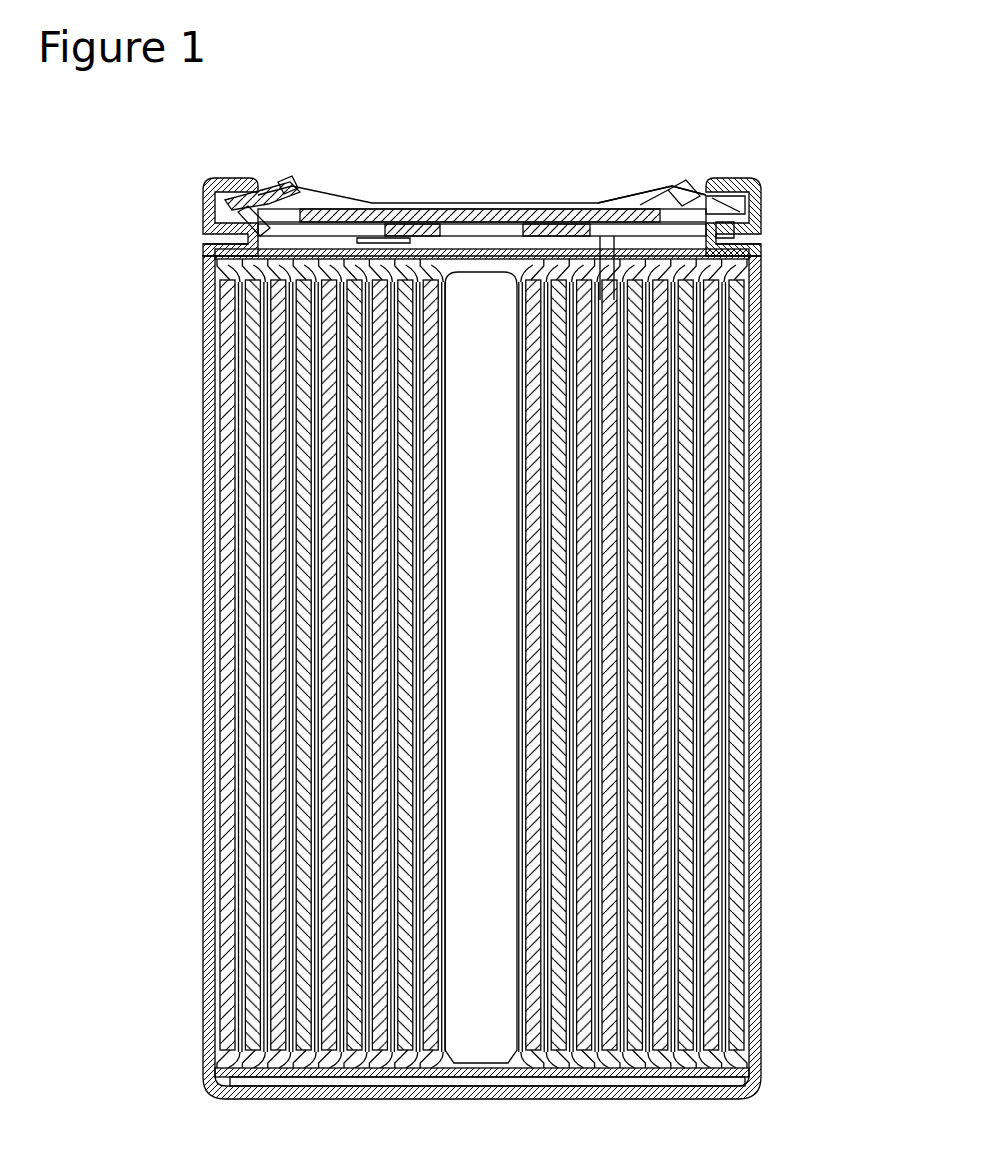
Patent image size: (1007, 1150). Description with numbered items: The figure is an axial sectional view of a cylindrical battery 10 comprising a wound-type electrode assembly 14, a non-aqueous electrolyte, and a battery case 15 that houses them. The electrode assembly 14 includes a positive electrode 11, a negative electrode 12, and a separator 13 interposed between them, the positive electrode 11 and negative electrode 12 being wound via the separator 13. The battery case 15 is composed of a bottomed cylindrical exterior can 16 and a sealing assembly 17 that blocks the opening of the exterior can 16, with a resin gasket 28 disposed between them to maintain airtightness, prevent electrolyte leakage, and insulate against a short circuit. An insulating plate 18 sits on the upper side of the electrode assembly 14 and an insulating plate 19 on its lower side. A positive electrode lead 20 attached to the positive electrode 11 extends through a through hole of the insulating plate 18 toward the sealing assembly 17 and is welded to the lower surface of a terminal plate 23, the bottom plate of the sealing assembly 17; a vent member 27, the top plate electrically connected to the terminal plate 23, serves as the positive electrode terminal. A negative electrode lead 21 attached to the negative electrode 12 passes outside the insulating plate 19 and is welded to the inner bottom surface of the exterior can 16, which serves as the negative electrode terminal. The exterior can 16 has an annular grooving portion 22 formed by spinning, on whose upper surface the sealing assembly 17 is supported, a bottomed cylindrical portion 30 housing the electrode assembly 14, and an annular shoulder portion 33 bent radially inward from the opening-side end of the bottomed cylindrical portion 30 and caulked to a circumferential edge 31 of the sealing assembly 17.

The cylindrical battery 10 is at (440, 178).
The positive electrode 11 is at (720, 610).
The negative electrode 12 is at (738, 630).
The separator 13 is at (735, 656).
The electrode assembly 14 is at (812, 592).
The battery case 15 is at (735, 128).
The exterior can 16 is at (735, 190).
The sealing assembly 17 is at (660, 192).
The insulating plate 18 is at (762, 240).
The insulating plate 19 is at (728, 1087).
The positive electrode lead 20 is at (488, 224).
The negative electrode lead 21 is at (227, 1078).
The grooving portion 22 is at (203, 239).
The terminal plate 23 is at (515, 224).
The vent member 27 is at (472, 209).
The gasket 28 is at (762, 200).
The bottomed cylindrical portion 30 is at (204, 345).
The circumferential edge 31 is at (232, 182).
The shoulder portion 33 is at (246, 185).